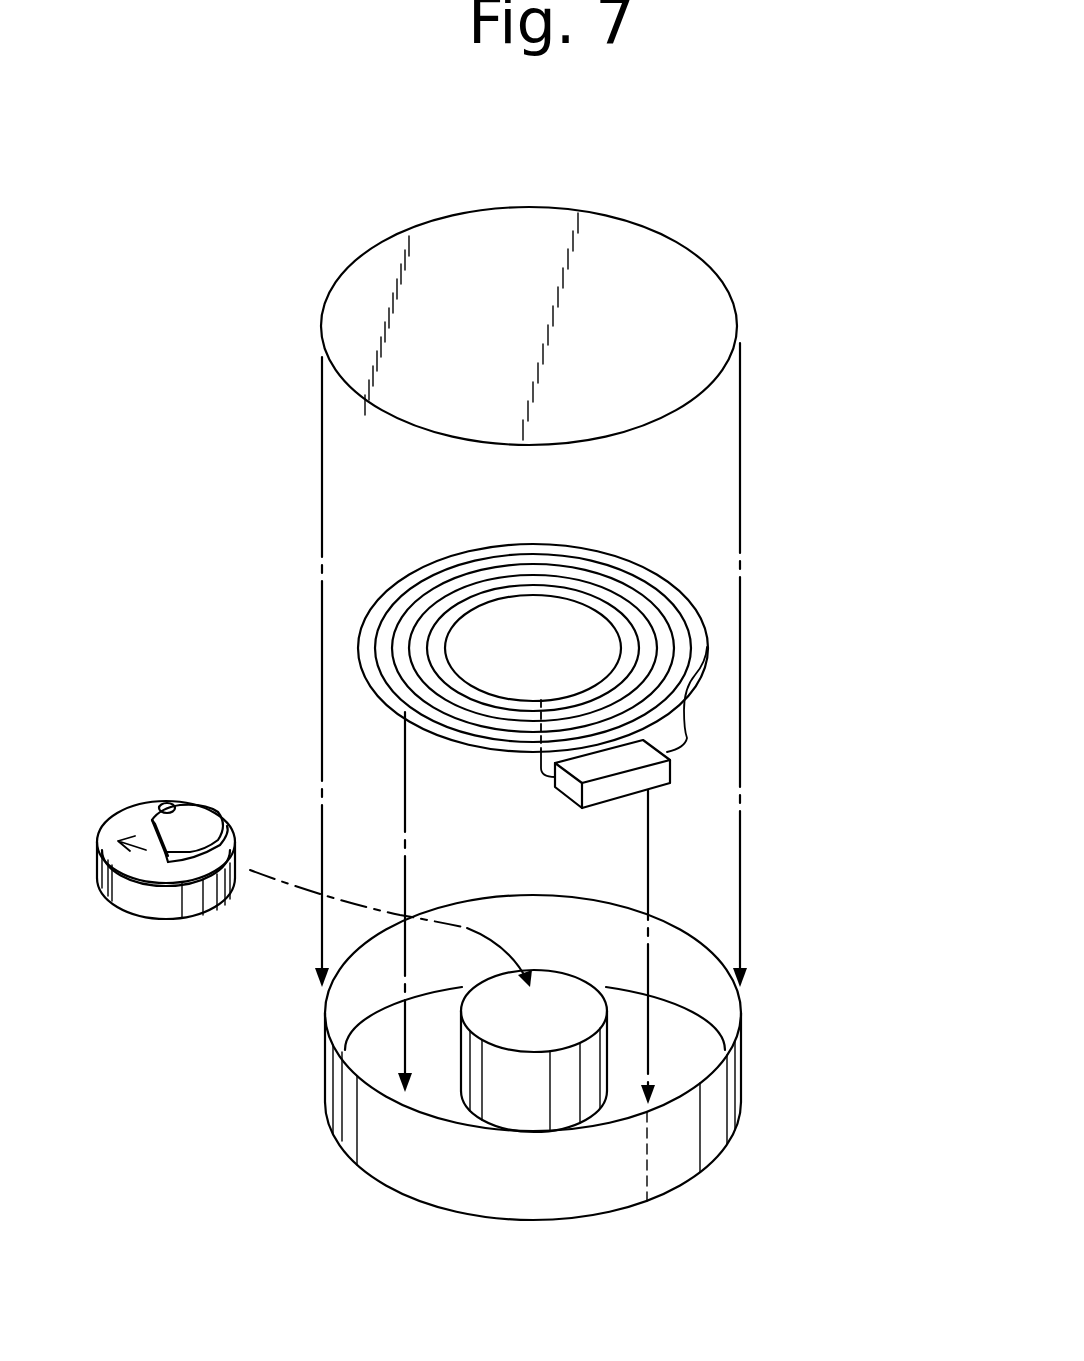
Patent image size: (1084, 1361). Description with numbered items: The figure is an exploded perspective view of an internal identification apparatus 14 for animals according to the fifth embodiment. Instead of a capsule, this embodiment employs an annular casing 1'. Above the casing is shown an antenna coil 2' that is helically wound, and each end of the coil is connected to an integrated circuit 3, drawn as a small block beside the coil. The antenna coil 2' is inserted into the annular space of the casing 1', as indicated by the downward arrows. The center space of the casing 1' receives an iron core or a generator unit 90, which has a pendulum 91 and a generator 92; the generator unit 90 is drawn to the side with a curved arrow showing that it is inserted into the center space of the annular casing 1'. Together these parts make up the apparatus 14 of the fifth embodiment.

The internal identification apparatus 14 is at (825, 595).
The antenna coil 2′ is at (590, 548).
The integrated circuit 3 is at (572, 802).
The annular casing 1′ is at (745, 1070).
The generator unit 90 is at (161, 830).
The pendulum 91 is at (145, 760).
The generator 92 is at (175, 907).